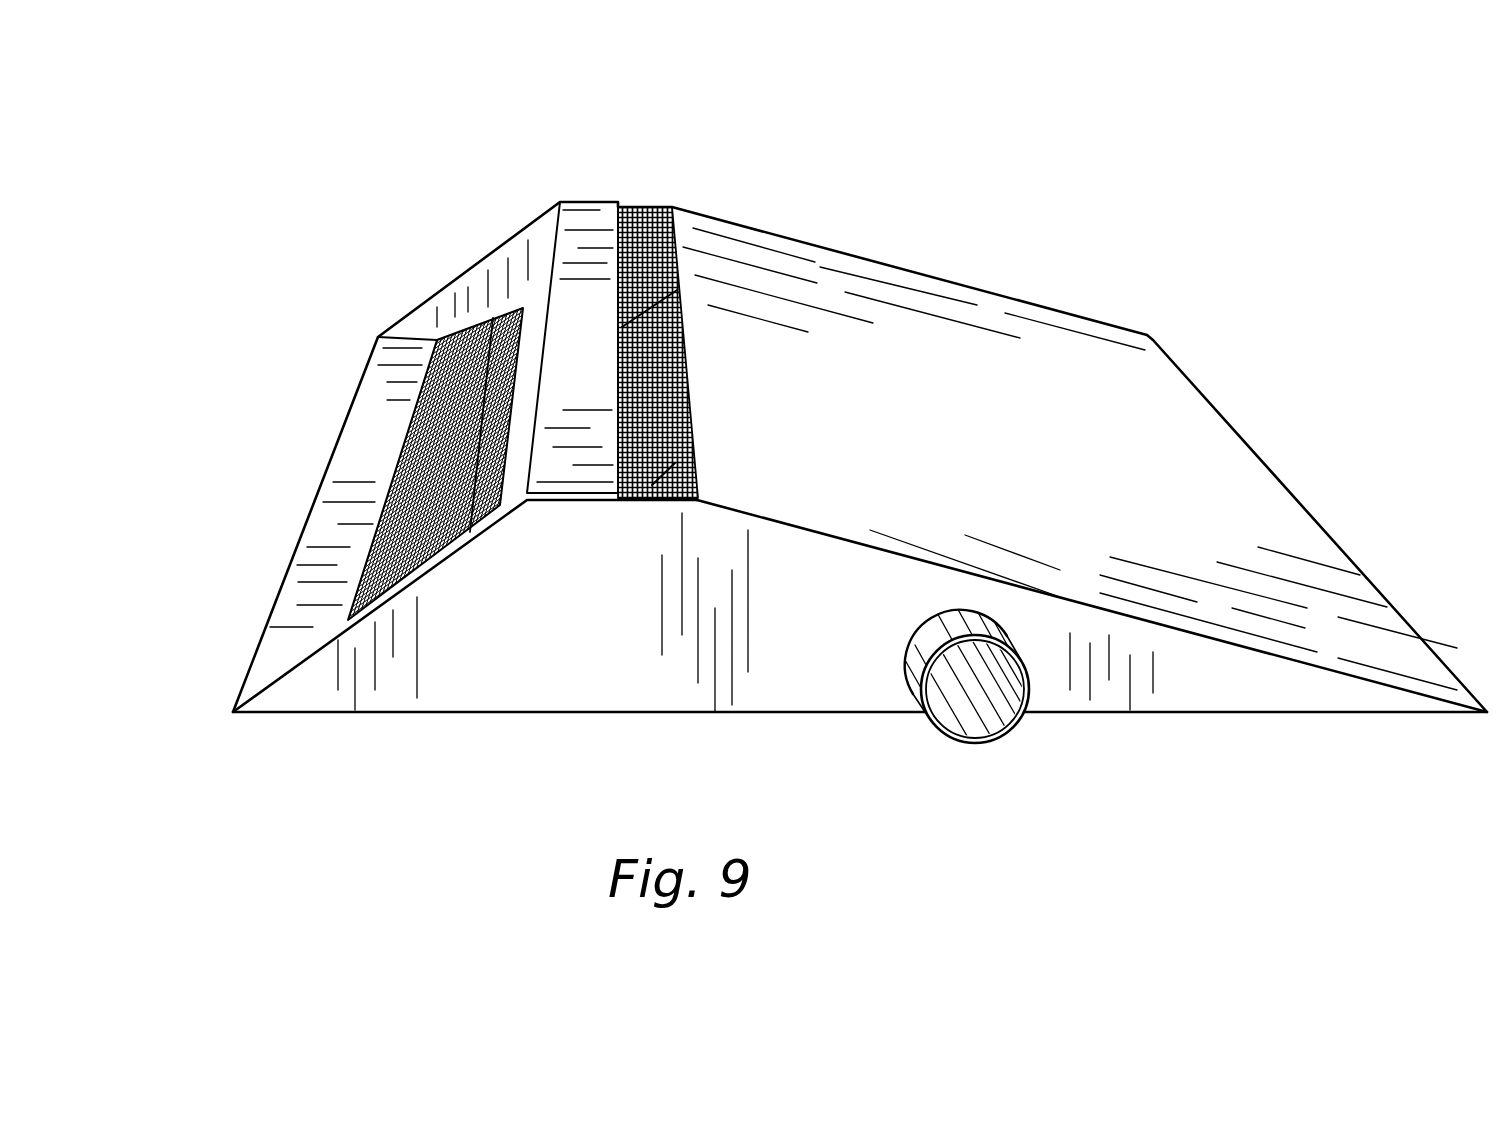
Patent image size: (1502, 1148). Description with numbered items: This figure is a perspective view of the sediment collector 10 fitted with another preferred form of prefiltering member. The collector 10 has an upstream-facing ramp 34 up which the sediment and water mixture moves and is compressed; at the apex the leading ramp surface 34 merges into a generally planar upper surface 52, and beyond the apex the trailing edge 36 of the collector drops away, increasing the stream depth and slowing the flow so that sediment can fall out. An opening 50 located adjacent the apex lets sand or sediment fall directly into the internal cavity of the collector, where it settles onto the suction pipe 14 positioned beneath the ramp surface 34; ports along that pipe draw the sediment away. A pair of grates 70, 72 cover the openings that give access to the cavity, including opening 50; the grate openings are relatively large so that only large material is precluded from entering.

The collector 10 is at (981, 264).
The suction pipe 14 is at (973, 693).
The ramp 34 is at (1162, 440).
The trailing edge 36 is at (293, 657).
The opening 50 is at (658, 473).
The upper surface 52 is at (583, 220).
The grate 70 is at (643, 230).
The grate 72 is at (410, 430).